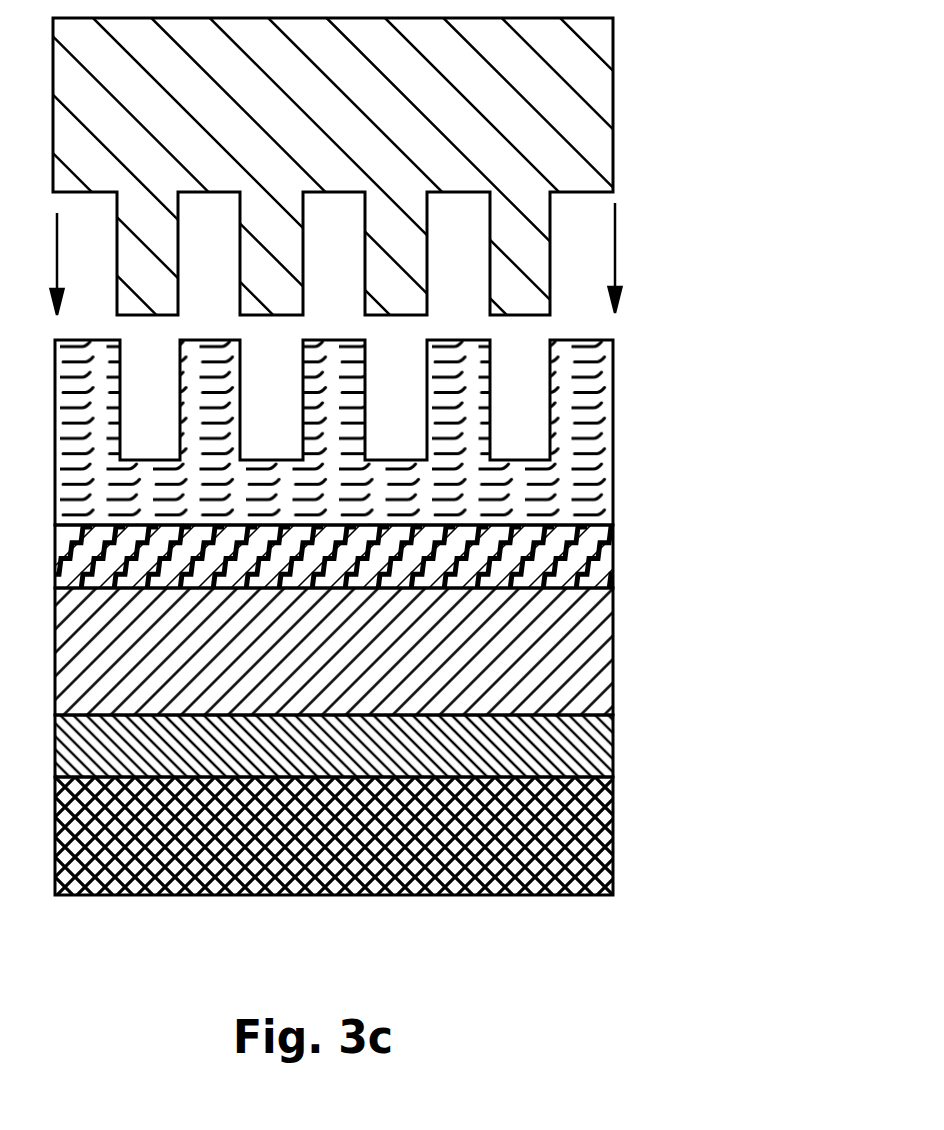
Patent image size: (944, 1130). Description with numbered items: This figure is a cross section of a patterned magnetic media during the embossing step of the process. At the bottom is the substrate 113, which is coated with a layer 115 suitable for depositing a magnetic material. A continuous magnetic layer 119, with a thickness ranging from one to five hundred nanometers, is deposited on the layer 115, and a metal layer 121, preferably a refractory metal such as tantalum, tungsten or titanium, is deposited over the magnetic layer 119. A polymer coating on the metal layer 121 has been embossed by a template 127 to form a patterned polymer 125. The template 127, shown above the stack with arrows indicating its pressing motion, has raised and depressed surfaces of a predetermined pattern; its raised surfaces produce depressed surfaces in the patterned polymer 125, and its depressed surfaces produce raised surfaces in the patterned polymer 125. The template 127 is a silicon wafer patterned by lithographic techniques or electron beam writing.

The template 127 is at (613, 98).
The patterned polymer 125 is at (613, 400).
The metal layer 121 is at (613, 560).
The magnetic layer 119 is at (613, 673).
The layer 115 is at (613, 743).
The substrate 113 is at (613, 850).